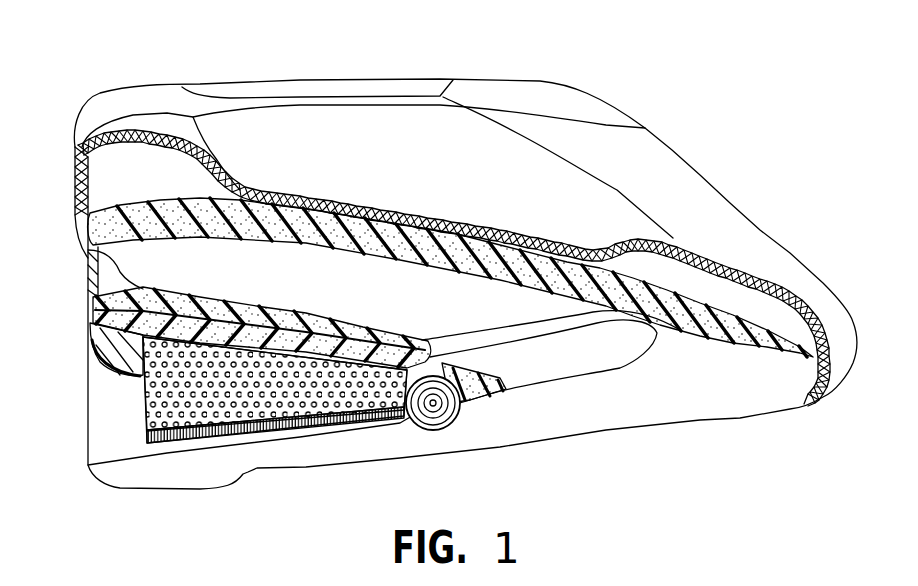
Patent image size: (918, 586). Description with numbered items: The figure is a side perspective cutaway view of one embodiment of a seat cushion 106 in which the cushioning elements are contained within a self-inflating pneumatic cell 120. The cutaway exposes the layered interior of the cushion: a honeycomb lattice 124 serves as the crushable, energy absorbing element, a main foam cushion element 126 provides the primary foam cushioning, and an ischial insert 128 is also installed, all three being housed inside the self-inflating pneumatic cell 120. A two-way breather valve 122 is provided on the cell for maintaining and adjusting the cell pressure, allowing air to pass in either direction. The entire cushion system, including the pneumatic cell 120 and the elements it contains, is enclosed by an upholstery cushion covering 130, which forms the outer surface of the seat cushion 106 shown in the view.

The seat cushion 106 is at (250, 42).
The upholstery cushion covering 130 is at (383, 79).
The self-inflating pneumatic cell 120 is at (108, 187).
The ischial insert 128 is at (138, 272).
The main foam cushion element 126 is at (110, 340).
The honeycomb lattice 124 is at (283, 433).
The two-way breather valve 122 is at (453, 422).